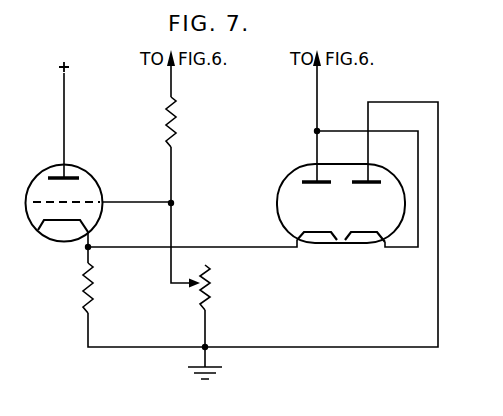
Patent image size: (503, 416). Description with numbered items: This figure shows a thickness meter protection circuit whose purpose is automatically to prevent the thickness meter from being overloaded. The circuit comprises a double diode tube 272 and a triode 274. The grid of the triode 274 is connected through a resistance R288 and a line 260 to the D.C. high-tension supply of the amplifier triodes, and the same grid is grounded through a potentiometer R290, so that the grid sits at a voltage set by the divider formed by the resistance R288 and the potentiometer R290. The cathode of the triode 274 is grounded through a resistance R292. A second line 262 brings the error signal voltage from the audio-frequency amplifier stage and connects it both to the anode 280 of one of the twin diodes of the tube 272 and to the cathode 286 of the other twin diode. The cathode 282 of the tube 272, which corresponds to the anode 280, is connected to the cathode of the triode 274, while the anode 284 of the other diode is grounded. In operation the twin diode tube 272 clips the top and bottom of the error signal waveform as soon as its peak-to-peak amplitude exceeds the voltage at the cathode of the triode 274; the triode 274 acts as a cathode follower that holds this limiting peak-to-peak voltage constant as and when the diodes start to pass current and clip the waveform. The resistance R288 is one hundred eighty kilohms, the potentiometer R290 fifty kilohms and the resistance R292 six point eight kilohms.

The line 260 is at (170, 91).
The line 262 is at (316, 92).
The resistance R288 is at (175, 134).
The resistance R292 is at (93, 311).
The potentiometer R290 is at (215, 308).
The triode 274 is at (78, 199).
The double diode tube 272 is at (358, 212).
The anode 280 is at (308, 178).
The anode 284 is at (375, 177).
The cathode 282 is at (323, 233).
The cathode 286 is at (362, 233).